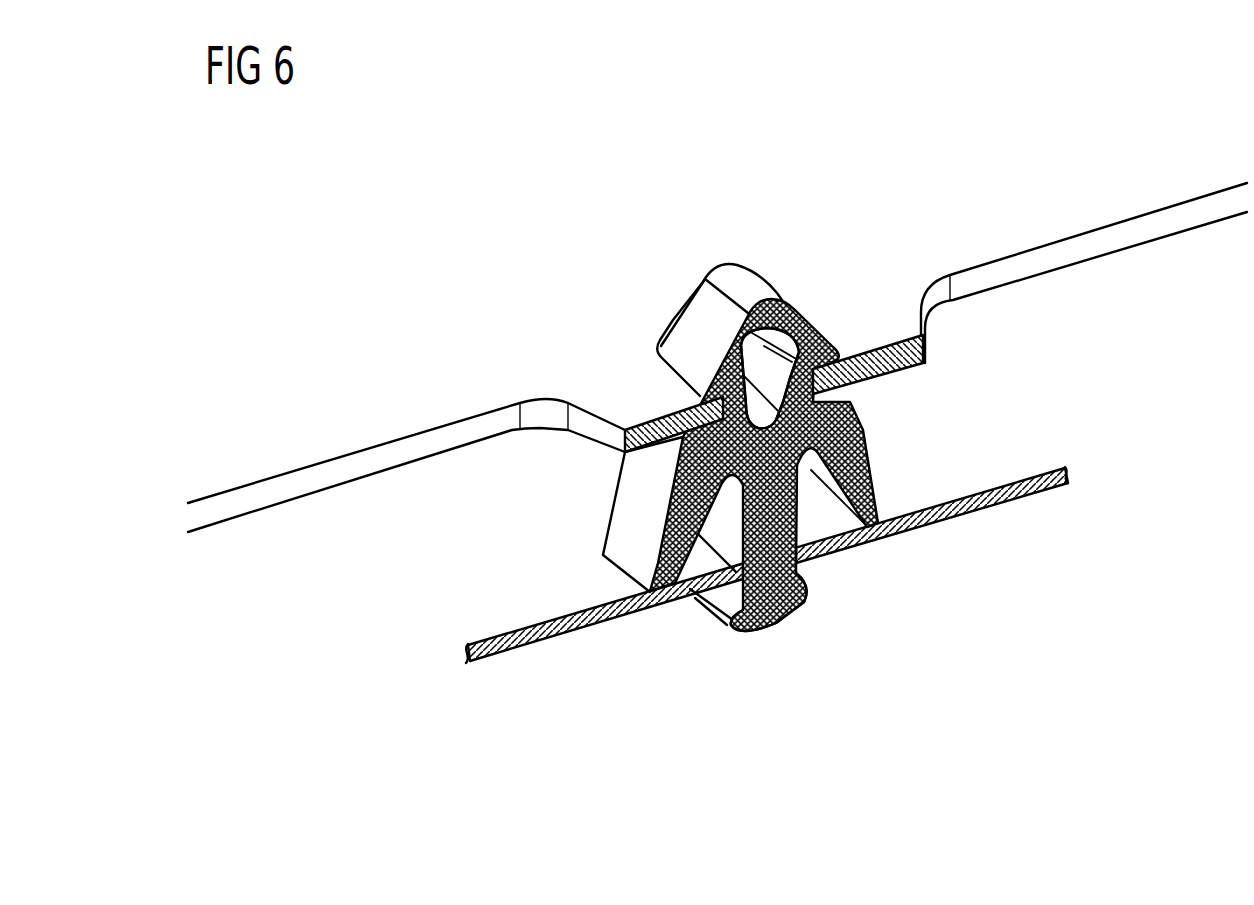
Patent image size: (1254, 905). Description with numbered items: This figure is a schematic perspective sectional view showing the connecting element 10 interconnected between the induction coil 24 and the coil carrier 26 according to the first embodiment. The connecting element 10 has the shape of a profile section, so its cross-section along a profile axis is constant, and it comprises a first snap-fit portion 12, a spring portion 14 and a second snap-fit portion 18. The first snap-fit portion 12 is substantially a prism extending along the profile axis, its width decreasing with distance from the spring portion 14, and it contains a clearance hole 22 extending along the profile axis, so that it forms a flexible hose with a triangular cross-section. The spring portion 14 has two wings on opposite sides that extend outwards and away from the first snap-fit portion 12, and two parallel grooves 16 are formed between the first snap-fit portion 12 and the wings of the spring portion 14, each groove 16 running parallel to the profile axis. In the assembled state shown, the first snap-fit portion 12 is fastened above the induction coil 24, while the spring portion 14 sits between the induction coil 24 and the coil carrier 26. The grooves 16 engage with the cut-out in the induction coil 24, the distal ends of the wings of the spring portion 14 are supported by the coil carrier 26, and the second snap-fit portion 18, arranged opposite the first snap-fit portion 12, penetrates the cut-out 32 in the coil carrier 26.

The connecting element 10 is at (771, 440).
The first snap-fit portion 12 is at (697, 327).
The spring portion 14 is at (630, 524).
The grooves 16 is at (850, 381).
The second snap-fit portion 18 is at (777, 630).
The clearance hole 22 is at (808, 322).
The induction coil 24 is at (288, 488).
The coil carrier 26 is at (530, 643).
The cut-out 32 is at (813, 556).